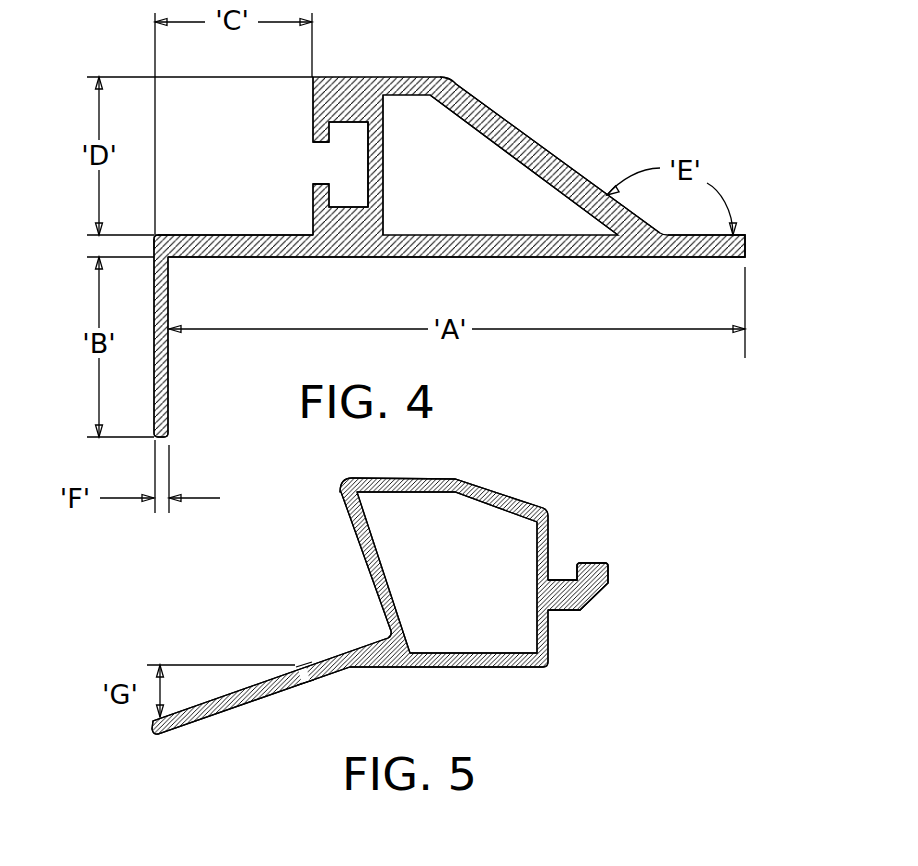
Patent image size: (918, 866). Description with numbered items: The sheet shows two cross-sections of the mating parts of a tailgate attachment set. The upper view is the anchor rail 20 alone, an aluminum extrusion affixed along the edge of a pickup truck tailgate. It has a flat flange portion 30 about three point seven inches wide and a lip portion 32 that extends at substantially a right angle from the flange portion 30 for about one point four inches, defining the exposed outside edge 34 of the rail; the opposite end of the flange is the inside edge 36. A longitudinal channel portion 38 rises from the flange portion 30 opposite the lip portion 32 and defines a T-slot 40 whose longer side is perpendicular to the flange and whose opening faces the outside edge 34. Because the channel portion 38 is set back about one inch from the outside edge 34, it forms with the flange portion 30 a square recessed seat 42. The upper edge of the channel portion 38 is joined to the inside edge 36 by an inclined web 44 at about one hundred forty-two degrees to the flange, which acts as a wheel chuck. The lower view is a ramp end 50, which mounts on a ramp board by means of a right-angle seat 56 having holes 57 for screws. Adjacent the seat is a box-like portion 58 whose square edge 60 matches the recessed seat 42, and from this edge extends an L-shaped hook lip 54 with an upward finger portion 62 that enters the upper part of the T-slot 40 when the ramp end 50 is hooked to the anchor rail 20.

In FIG. 4, the anchor rail 20 is at (625, 67).
In FIG. 4, the flange portion 30 is at (550, 257).
In FIG. 4, the lip portion 32 is at (169, 385).
In FIG. 4, the outside edge 34 is at (154, 238).
In FIG. 4, the inside edge 36 is at (745, 247).
In FIG. 4, the channel portion 38 is at (385, 140).
In FIG. 4, the T-slot 40 is at (302, 158).
In FIG. 4, the recessed seat 42 is at (190, 233).
In FIG. 4, the web 44 is at (562, 165).
In FIG. 5, the ramp end 50 is at (643, 475).
In FIG. 5, the L-shaped hook lip 54 is at (594, 601).
In FIG. 5, the right-angle seat 56 is at (353, 645).
In FIG. 5, the holes 57 is at (307, 680).
In FIG. 5, the box-like portion 58 is at (483, 492).
In FIG. 5, the square edge 60 is at (548, 543).
In FIG. 5, the finger portion 62 is at (593, 563).